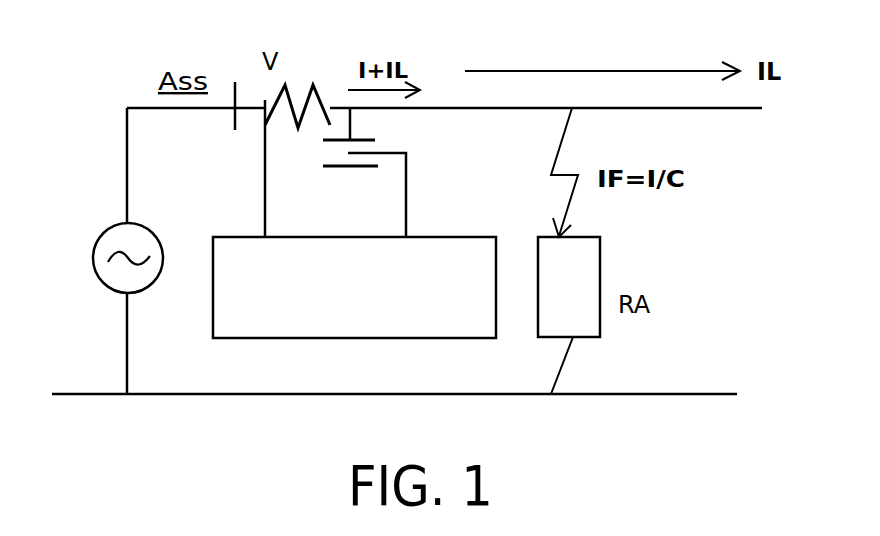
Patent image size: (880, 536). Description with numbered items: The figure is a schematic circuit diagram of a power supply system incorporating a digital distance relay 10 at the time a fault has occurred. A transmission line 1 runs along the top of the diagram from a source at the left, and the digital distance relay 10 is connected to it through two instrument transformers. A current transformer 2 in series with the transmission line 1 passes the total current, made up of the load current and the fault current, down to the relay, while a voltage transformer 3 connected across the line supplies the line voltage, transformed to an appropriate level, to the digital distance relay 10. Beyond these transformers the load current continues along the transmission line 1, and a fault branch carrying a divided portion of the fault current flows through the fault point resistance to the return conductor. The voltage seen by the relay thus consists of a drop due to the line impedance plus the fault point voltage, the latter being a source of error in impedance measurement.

The transmission line 1 is at (735, 110).
The current transformer 2 is at (325, 88).
The voltage transformer 3 is at (380, 143).
The digital distance relay 10 is at (225, 236).